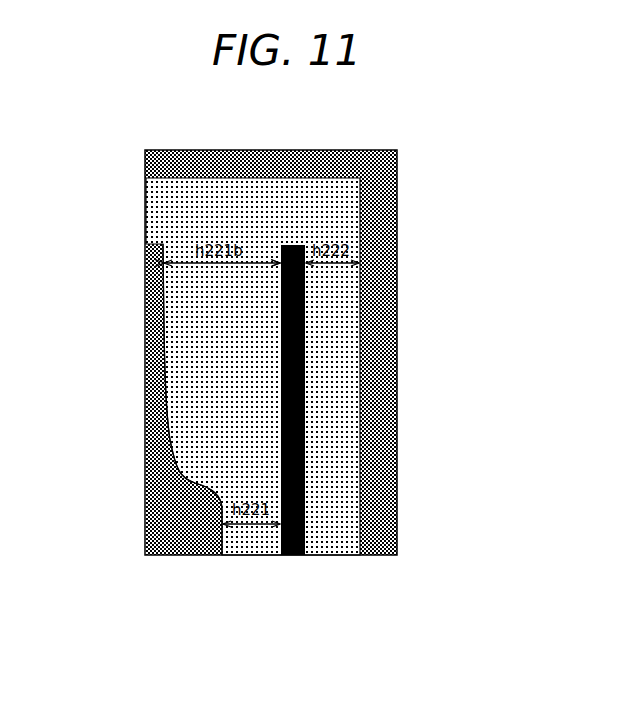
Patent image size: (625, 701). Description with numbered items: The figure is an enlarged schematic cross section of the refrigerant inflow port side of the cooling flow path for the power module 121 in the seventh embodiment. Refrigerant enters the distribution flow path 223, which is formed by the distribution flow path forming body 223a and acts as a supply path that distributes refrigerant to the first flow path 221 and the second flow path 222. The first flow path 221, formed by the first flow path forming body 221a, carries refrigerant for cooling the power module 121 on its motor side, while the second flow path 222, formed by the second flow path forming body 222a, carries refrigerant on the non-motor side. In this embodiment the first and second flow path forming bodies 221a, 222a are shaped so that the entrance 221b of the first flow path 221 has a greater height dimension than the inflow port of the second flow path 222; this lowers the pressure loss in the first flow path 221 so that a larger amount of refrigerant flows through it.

The power module 121 is at (292, 555).
The first flow path 221 is at (239, 555).
The first flow path forming body 221a is at (150, 363).
The entrance of the first flow path 221b is at (187, 408).
The second flow path 222 is at (340, 545).
The second flow path forming body 222a is at (387, 380).
The distribution flow path 223 is at (330, 202).
The distribution flow path forming body 223a is at (200, 162).